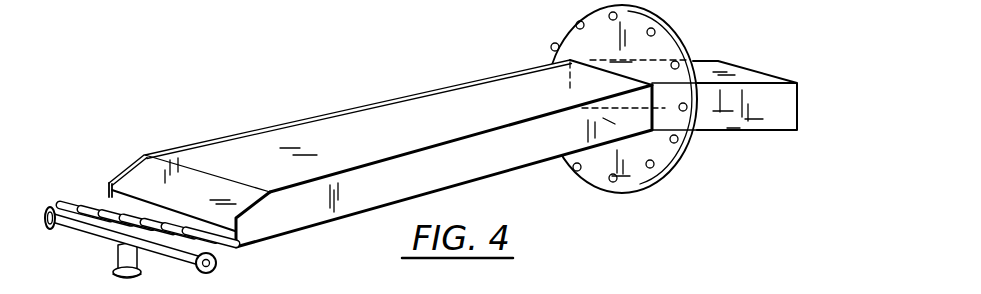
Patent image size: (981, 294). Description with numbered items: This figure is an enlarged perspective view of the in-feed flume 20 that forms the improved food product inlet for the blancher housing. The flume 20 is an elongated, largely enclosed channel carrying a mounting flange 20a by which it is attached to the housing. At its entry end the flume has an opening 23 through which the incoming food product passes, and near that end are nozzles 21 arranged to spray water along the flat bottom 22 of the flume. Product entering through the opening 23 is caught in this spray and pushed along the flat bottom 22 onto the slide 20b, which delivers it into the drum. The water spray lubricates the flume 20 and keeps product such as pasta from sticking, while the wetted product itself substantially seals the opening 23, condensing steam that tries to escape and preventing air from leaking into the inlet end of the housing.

The in-feed flume 20 is at (328, 130).
The mounting flange 20a is at (567, 33).
The slide 20b is at (743, 75).
The nozzles 21 is at (85, 206).
The flat bottom 22 is at (222, 200).
The opening 23 is at (200, 173).